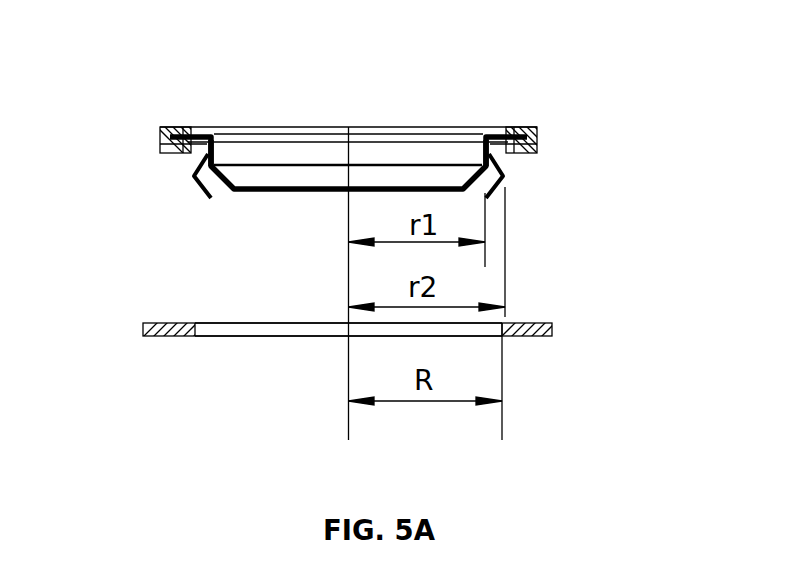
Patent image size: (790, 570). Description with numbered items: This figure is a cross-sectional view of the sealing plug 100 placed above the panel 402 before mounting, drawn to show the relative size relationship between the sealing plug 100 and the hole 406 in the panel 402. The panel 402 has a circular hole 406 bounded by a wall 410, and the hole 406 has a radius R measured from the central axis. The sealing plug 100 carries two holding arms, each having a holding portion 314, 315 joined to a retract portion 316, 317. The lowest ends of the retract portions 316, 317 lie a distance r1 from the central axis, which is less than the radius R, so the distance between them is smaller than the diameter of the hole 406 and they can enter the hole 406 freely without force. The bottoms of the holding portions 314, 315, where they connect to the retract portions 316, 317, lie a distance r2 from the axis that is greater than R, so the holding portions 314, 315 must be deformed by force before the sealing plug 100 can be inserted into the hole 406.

The sealing plug 100 is at (388, 117).
The holding portion 314 is at (207, 160).
The holding portion 315 is at (496, 163).
The retract portion 316 is at (197, 180).
The retract portion 317 is at (503, 183).
The panel 402 is at (401, 352).
The hole 406 is at (325, 334).
The wall 410 is at (198, 337).